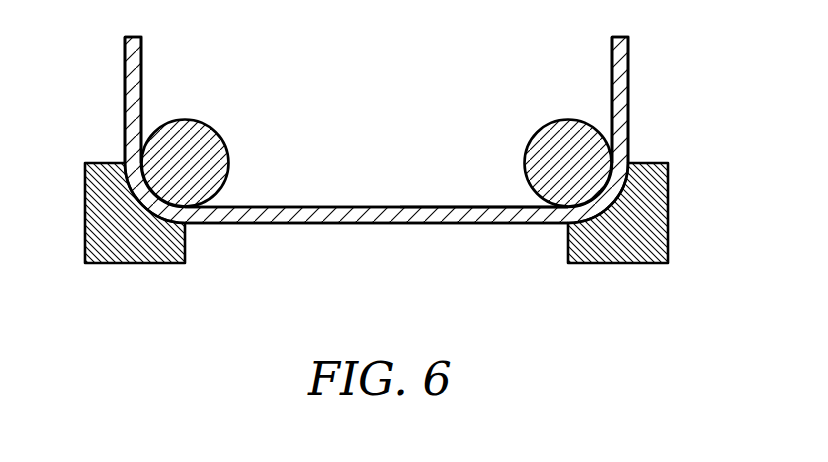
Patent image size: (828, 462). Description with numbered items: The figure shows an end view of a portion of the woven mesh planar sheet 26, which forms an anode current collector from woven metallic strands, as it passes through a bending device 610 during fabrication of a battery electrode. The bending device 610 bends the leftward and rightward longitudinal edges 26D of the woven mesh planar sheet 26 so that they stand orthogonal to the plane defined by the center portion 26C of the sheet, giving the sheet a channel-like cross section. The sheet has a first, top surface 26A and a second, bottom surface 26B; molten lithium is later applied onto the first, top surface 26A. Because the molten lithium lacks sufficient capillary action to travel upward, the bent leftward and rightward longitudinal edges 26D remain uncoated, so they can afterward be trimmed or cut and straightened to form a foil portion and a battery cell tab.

The woven mesh planar sheet 26 is at (377, 207).
The first, top surface 26A is at (331, 207).
The second, bottom surface 26B is at (352, 224).
The center portion 26C is at (434, 207).
The leftward and rightward longitudinal edges 26D is at (143, 82).
The bending device 610 is at (187, 243).